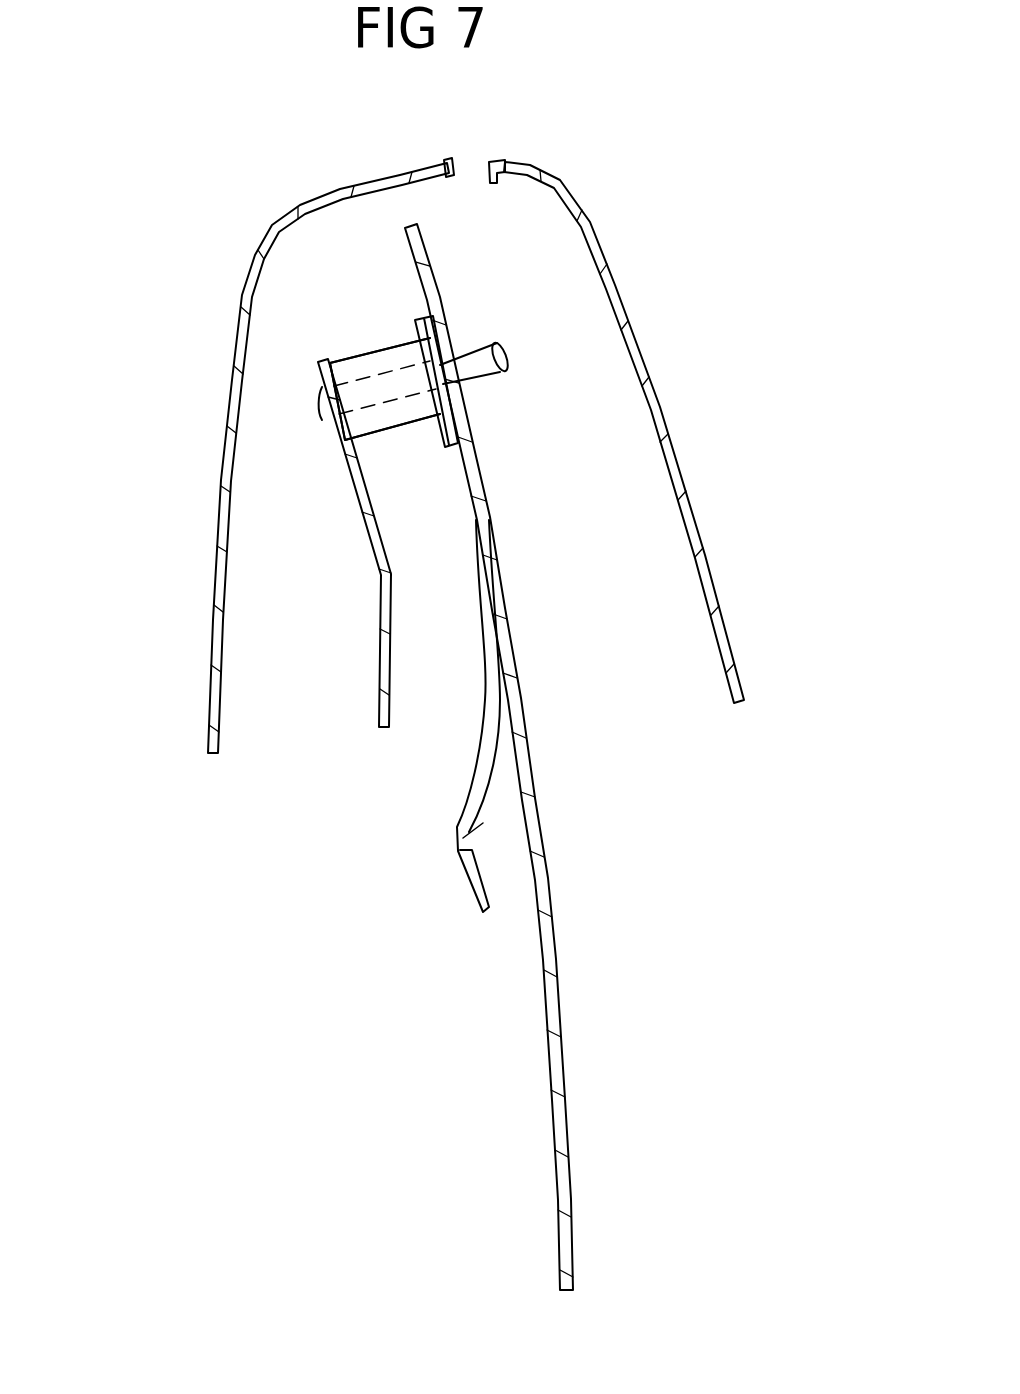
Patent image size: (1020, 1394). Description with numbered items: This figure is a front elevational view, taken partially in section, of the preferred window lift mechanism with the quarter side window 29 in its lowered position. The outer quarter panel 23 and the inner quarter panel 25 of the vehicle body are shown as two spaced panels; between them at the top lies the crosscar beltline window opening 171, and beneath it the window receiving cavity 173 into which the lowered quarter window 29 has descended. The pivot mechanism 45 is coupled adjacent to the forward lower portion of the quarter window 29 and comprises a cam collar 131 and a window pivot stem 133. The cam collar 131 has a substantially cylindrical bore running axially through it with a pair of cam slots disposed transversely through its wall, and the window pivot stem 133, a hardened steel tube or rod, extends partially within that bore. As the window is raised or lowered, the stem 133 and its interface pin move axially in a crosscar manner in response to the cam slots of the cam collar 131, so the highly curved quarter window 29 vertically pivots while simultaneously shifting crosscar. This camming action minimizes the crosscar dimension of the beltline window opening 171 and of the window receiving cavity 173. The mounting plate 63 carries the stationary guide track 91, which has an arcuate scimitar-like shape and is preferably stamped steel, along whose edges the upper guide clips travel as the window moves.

The crosscar beltline window opening 171 is at (475, 142).
The pivot mechanism 45 is at (357, 333).
The window pivot stem 133 is at (480, 355).
The cam collar 131 is at (372, 424).
The inner quarter panel 25 is at (223, 452).
The outer quarter panel 23 is at (653, 392).
The window receiving cavity 173 is at (601, 489).
The mounting plate 63 is at (364, 530).
The guide track 91 is at (456, 852).
The quarter side window 29 is at (554, 986).